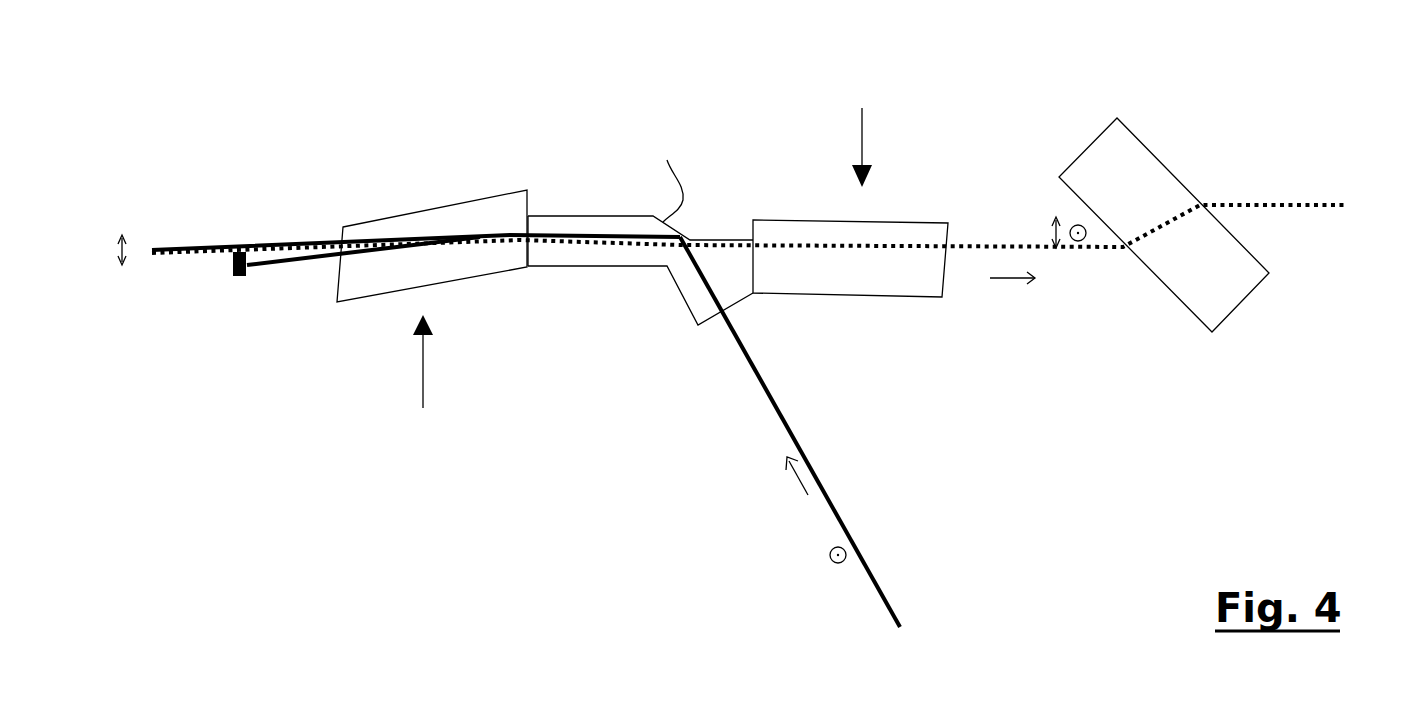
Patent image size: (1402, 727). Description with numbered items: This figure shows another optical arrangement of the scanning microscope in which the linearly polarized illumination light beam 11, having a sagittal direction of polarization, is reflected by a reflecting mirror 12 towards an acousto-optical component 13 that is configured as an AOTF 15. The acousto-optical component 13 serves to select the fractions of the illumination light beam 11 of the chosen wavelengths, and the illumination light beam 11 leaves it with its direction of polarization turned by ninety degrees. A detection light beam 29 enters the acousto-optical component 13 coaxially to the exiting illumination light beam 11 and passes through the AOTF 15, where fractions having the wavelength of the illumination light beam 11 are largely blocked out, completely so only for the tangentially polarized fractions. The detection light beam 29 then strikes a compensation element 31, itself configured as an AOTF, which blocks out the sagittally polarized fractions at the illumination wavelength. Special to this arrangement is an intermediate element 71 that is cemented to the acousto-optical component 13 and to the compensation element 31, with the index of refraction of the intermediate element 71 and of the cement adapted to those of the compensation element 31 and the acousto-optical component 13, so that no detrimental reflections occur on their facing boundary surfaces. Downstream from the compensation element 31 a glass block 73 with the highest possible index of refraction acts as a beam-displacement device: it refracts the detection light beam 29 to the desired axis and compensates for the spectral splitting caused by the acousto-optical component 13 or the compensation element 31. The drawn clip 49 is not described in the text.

The illumination light beam 11 is at (788, 423).
The reflecting mirror 12 is at (177, 248).
The acousto-optical component 13 is at (427, 388).
The AOTF 15 is at (473, 213).
The detection light beam 29 is at (168, 255).
The compensation element 31 is at (930, 345).
The clip 49 is at (232, 277).
The intermediate element 71 is at (690, 283).
The glass block 73 is at (1208, 268).